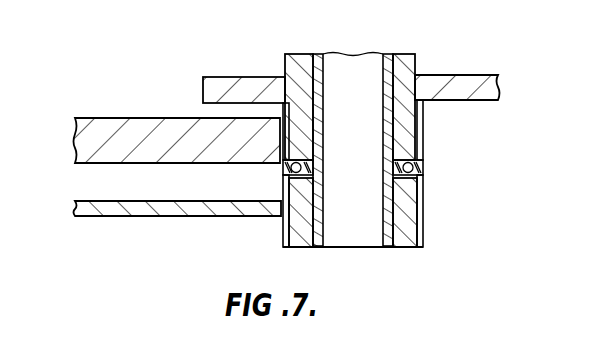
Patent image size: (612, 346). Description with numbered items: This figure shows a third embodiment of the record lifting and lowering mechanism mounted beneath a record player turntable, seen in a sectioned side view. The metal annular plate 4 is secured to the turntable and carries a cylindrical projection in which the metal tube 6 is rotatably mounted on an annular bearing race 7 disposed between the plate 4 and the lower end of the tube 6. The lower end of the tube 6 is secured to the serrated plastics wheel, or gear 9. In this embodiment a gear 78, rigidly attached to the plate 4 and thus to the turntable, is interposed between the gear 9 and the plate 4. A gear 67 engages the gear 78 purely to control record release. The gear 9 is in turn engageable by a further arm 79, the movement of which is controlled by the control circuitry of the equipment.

The annular plate 4 is at (220, 84).
The gear 67 is at (148, 133).
The further arm 79 is at (133, 210).
The gear 78 is at (423, 126).
The metal tube 6 is at (320, 216).
The annular bearing race 7 is at (418, 183).
The plastics wheel 9 is at (425, 215).